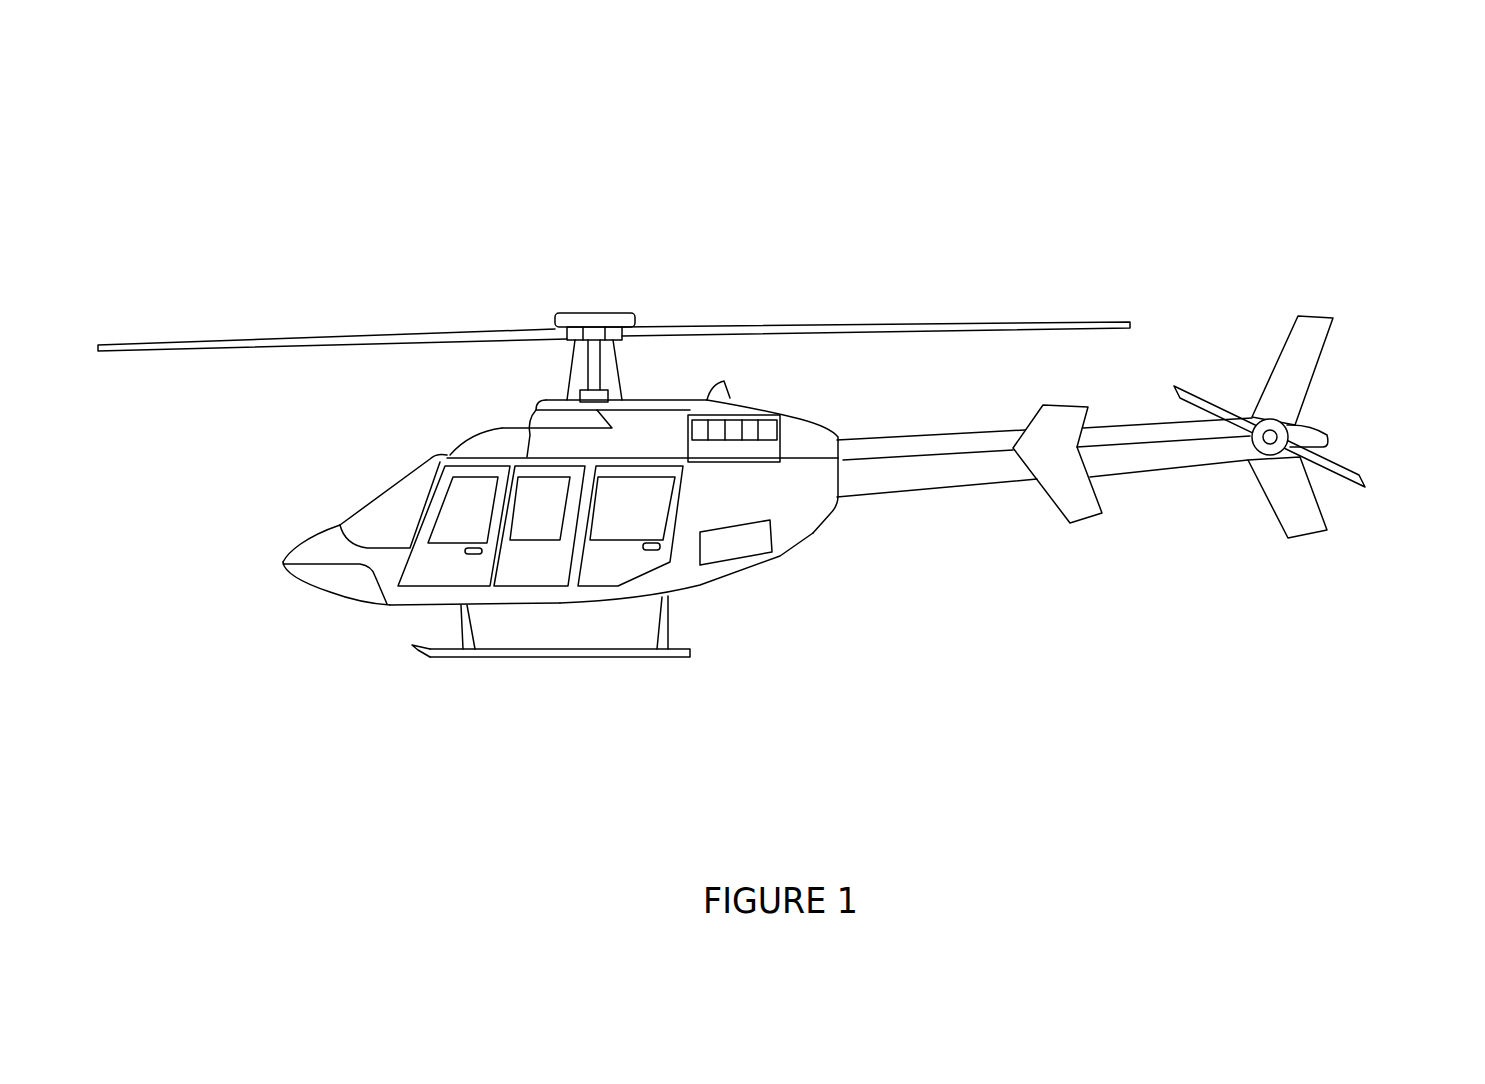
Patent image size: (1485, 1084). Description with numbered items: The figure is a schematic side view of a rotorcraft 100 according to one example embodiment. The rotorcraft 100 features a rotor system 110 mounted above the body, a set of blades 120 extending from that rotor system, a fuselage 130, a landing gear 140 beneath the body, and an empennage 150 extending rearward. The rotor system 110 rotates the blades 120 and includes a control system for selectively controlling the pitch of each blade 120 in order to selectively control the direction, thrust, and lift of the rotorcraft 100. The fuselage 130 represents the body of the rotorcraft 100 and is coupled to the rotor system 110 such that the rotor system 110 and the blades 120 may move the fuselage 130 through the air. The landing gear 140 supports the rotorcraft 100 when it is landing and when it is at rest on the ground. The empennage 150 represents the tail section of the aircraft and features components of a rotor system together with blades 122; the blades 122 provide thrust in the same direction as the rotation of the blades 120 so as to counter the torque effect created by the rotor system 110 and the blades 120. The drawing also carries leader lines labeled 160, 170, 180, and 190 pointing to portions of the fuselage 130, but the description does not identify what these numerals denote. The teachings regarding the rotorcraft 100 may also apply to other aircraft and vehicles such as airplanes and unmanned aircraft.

The rotorcraft 100 is at (325, 190).
The rotor system 110 is at (595, 312).
The blades 120 is at (908, 325).
The blades 122 is at (1347, 462).
The fuselage 130 is at (335, 600).
The landing gear 140 is at (505, 658).
The empennage 150 is at (947, 487).
The aft fuselage section 160 is at (682, 573).
The engine/roof fairing 170 is at (657, 400).
The fuselage underside 180 is at (547, 605).
The rear fuselage 190 is at (813, 533).